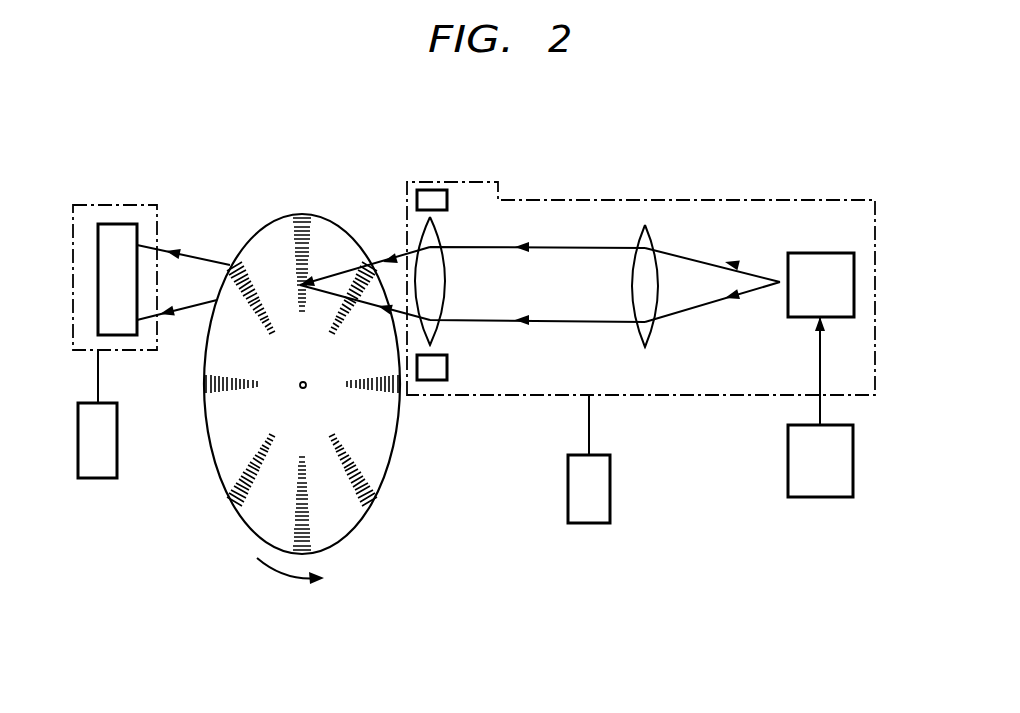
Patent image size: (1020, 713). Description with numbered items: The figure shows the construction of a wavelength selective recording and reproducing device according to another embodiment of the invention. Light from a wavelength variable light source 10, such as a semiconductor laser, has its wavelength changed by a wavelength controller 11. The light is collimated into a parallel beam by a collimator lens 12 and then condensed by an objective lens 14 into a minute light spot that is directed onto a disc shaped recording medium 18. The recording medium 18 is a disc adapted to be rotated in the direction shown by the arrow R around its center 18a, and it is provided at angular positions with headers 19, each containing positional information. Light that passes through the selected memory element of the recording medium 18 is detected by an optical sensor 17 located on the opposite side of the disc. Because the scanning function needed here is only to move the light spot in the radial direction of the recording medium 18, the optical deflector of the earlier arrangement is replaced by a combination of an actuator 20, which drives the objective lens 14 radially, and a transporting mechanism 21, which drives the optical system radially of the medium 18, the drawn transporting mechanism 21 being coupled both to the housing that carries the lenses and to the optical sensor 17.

The wavelength variable light source 10 is at (854, 285).
The wavelength controller 11 is at (853, 460).
The collimator lens 12 is at (652, 240).
The objective lens 14 is at (432, 237).
The optical sensor 17 is at (130, 224).
The disc shaped recording medium 18 is at (284, 379).
The center 18a is at (300, 387).
The header 19 is at (296, 218).
The actuator 20 is at (447, 200).
The transporting mechanism 21 is at (97, 478).